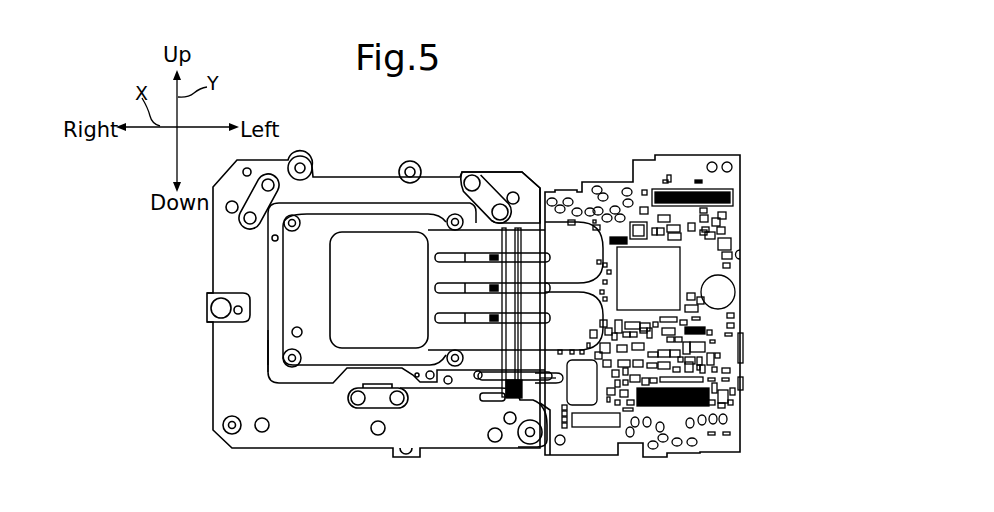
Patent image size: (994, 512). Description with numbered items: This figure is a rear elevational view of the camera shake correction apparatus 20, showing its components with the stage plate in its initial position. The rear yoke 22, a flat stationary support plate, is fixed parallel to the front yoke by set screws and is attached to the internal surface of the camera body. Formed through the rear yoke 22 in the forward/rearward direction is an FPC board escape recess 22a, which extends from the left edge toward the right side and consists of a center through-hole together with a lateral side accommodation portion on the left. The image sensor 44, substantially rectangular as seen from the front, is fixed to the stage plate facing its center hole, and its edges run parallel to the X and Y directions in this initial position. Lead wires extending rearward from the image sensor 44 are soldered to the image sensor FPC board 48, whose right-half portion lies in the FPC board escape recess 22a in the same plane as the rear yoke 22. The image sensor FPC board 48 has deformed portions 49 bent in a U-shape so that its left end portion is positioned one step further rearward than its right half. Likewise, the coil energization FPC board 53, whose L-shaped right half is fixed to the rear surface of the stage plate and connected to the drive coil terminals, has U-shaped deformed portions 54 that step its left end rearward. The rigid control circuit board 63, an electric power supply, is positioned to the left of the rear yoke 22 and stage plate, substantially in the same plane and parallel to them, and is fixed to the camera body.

The camera shake correction apparatus 20 is at (655, 86).
The rear yoke 22 is at (370, 188).
The FPC board escape recess 22a is at (301, 350).
The image sensor 44 is at (339, 224).
The image sensor FPC board 48 is at (412, 247).
The deformed portions 49 is at (512, 303).
The coil energization FPC board 53 is at (270, 357).
The deformed portions 54 is at (513, 393).
The control circuit board 63 is at (680, 160).